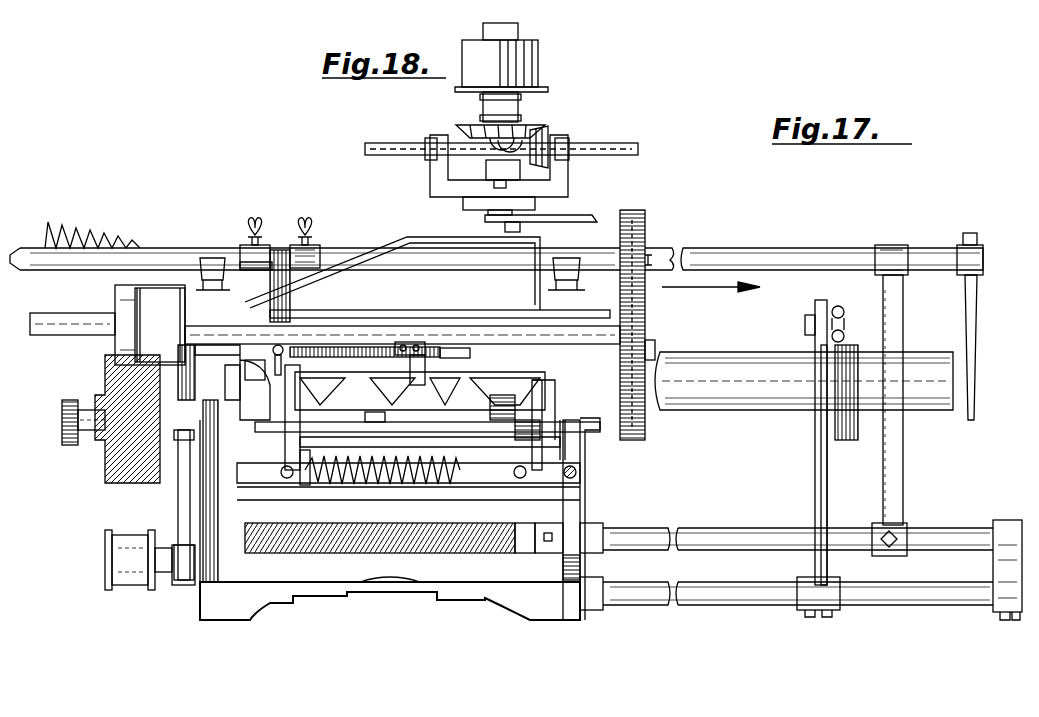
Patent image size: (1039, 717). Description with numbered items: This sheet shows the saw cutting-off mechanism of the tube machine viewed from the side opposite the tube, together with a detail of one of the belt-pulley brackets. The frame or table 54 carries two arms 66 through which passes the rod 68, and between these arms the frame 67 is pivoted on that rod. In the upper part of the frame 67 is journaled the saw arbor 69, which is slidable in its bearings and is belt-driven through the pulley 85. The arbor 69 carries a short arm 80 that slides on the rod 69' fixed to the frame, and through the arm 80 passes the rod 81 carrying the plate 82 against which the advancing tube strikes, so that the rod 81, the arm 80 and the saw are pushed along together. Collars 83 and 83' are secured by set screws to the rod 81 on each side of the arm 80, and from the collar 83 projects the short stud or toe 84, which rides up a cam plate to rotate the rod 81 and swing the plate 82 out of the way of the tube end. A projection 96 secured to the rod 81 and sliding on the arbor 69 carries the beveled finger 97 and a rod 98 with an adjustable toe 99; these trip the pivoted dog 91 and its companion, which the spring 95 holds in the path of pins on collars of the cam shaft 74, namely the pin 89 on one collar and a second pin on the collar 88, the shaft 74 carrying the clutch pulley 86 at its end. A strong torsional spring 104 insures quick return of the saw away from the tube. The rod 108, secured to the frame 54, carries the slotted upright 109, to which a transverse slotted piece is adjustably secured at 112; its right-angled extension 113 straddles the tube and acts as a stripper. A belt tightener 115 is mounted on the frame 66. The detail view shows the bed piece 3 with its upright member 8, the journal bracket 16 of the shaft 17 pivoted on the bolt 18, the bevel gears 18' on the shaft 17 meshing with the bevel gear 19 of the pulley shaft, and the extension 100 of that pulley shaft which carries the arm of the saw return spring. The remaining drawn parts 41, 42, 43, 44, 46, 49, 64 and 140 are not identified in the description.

In FIG. 18, the extension 100 is at (520, 30).
In FIG. 18, the bevel gear 19 is at (525, 125).
In FIG. 18, the bevel gear 18' is at (565, 141).
In FIG. 18, the shaft 17 is at (600, 147).
In FIG. 18, the journal bracket 16 is at (568, 176).
In FIG. 18, the upright member 8 is at (500, 173).
In FIG. 18, the bolt 18 is at (462, 201).
In FIG. 18, the bed piece 3 is at (490, 202).
In FIG. 17, the rod 81 is at (770, 256).
In FIG. 17, the wheel 44 is at (645, 232).
In FIG. 17, the cylinder 46 is at (728, 405).
In FIG. 17, the adjustable securing point 112 is at (805, 320).
In FIG. 17, the upright 109 is at (815, 480).
In FIG. 17, the right angled extension 113 is at (848, 440).
In FIG. 17, the bar 49 is at (903, 496).
In FIG. 17, the plate 82 is at (975, 395).
In FIG. 17, the rod 68 is at (700, 540).
In FIG. 17, the rod 108 is at (700, 598).
In FIG. 17, the arm 66 is at (210, 513).
In FIG. 17, the frame 54 is at (500, 592).
In FIG. 17, the short arm 80 is at (290, 300).
In FIG. 17, the arbor 69 is at (440, 304).
In FIG. 17, the rod 98 is at (365, 348).
In FIG. 17, the adjustable toe 99 is at (440, 340).
In FIG. 17, the rod 69' is at (474, 355).
In FIG. 17, the pulley 85 is at (138, 292).
In FIG. 17, the short arm 84 is at (243, 265).
In FIG. 17, the collar 83 is at (271, 234).
In FIG. 17, the collar 83' is at (326, 243).
In FIG. 17, the projection 96 is at (273, 352).
In FIG. 17, the truss plate 64 is at (425, 392).
In FIG. 17, the collar 88 is at (502, 399).
In FIG. 17, the frame 67 is at (545, 393).
In FIG. 17, the frame member 42 is at (183, 392).
In FIG. 17, the beveled dog 97 is at (220, 382).
In FIG. 17, the block 140 is at (265, 370).
In FIG. 17, the pin 89 is at (300, 405).
In FIG. 17, the bar 43 is at (300, 444).
In FIG. 17, the spring 95 is at (382, 472).
In FIG. 17, the pivoted dog 91 is at (300, 470).
In FIG. 17, the shaft 74 is at (375, 422).
In FIG. 17, the torsional spring 104 is at (345, 555).
In FIG. 17, the belt tightener 115 is at (120, 560).
In FIG. 17, the clutch pulley 86 is at (125, 485).
In FIG. 17, the bolt 41 is at (180, 452).